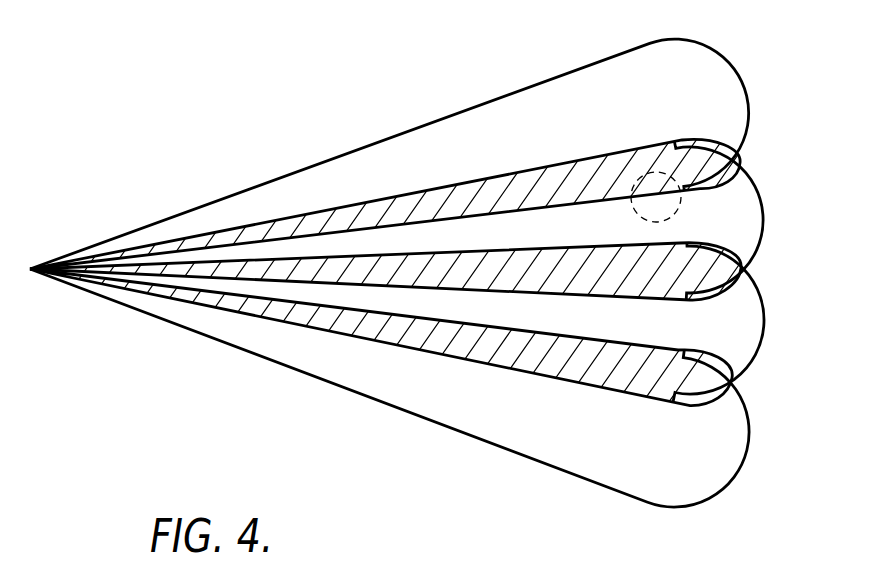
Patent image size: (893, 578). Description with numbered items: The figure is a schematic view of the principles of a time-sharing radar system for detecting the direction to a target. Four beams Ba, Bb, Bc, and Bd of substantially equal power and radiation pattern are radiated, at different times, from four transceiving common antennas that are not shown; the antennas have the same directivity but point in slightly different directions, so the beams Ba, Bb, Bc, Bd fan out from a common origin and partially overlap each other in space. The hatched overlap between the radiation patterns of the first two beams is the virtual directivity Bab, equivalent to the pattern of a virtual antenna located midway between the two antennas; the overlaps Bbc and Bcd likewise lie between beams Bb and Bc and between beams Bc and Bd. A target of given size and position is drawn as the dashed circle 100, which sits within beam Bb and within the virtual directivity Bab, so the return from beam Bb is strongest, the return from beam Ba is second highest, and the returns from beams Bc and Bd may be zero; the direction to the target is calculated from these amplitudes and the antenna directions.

The beam Ba is at (717, 48).
The virtual directivity Bab is at (707, 145).
The beam Bb is at (762, 193).
The virtual directivity Bbc is at (727, 264).
The beam Bc is at (765, 325).
The virtual directivity Bcd is at (718, 377).
The beam Bd is at (743, 456).
The target 100 is at (619, 140).